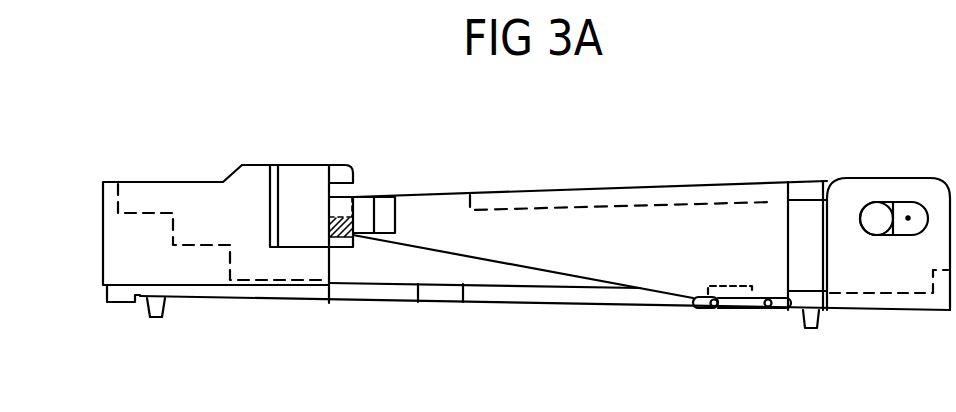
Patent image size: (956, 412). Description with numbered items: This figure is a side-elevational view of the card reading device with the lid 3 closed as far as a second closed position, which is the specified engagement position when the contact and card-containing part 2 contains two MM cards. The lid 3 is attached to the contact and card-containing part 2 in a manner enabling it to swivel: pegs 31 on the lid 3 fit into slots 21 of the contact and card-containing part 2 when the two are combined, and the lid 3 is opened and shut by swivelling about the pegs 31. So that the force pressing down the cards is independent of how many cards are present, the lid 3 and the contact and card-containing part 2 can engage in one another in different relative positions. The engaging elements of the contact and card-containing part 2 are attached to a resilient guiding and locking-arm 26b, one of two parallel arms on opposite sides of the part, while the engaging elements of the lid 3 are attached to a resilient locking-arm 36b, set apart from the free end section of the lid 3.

The contact and card-containing part 2 is at (515, 295).
The lid 3 is at (433, 207).
The slots 21 is at (908, 218).
The resilient guiding and locking-arm 26b is at (297, 188).
The pegs 31 is at (870, 213).
The resilient locking-arm 36b is at (362, 210).